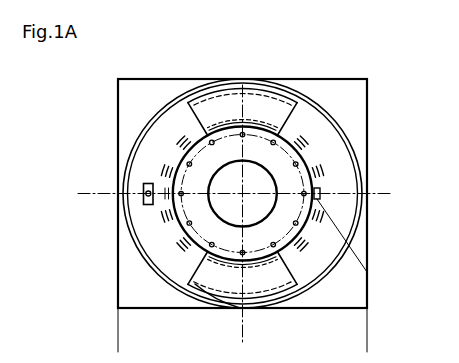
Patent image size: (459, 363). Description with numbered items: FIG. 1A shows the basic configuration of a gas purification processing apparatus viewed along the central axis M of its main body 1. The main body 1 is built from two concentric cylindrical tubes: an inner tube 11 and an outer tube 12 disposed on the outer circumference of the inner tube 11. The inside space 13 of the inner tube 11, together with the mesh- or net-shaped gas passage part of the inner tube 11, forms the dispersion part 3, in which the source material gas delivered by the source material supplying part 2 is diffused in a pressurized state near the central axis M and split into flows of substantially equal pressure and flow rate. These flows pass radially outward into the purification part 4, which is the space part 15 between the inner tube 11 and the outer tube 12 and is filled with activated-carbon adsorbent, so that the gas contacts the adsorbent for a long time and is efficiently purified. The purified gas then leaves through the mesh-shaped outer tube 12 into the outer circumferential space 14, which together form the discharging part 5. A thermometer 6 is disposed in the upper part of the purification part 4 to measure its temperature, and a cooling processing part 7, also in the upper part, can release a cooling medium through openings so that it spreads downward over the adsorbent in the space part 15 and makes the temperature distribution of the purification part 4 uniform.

The main body 1 is at (392, 127).
The source material supplying part 2 is at (225, 203).
The dispersion part 3 is at (264, 197).
The purification part 4 is at (250, 277).
The discharging part 5 is at (213, 306).
The thermometer 6 is at (145, 205).
The cooling processing part 7 is at (323, 203).
The inner tube 11 is at (163, 177).
The outer tube 12 is at (118, 138).
The inside space 13 is at (210, 165).
The outer circumferential space 14 is at (187, 104).
The space part 15 is at (163, 135).
The central axis M is at (242, 194).